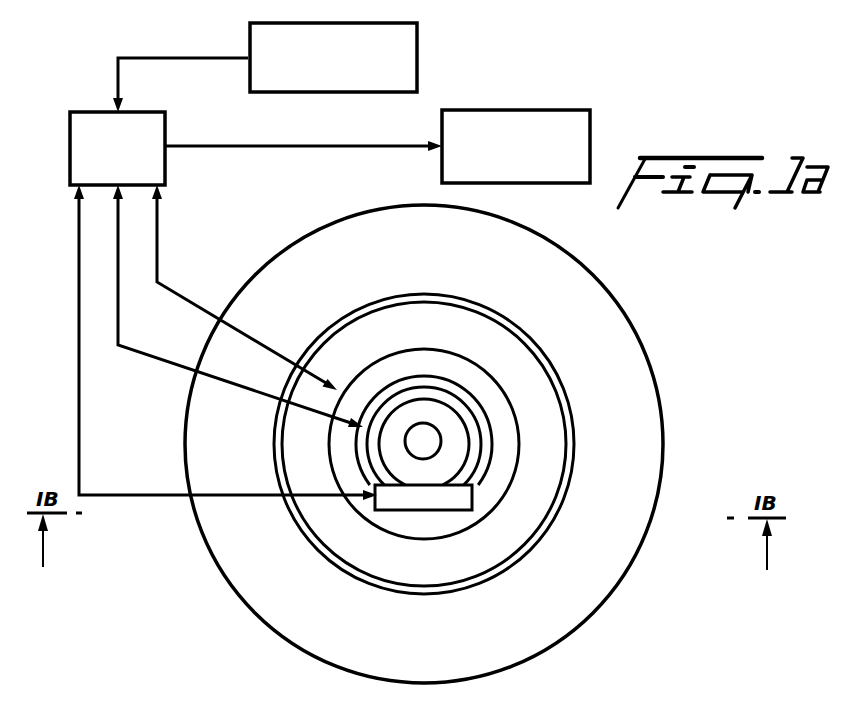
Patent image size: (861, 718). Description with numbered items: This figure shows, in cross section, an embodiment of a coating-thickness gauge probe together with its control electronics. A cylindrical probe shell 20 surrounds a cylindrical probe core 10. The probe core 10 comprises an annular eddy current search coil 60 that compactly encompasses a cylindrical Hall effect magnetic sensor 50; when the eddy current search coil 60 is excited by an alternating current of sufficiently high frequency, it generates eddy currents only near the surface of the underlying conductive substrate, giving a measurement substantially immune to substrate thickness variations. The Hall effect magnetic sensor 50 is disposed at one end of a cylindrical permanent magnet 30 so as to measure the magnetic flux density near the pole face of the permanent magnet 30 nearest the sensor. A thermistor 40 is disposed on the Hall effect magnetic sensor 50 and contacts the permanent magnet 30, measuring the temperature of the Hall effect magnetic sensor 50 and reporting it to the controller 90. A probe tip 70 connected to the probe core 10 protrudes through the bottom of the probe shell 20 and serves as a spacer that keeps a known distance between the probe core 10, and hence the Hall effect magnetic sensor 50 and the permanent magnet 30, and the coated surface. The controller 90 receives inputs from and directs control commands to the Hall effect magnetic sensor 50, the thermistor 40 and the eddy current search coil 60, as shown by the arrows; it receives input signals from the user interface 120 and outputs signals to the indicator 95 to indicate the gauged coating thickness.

The controller 90 is at (70, 128).
The user interface 120 is at (412, 66).
The indicator 95 is at (584, 130).
The probe shell 20 is at (598, 273).
The probe core 10 is at (547, 343).
The eddy current search coil 60 is at (498, 398).
The permanent magnet 30 is at (482, 449).
The Hall effect magnetic sensor 50 is at (458, 457).
The probe tip 70 is at (422, 428).
The thermistor 40 is at (380, 508).